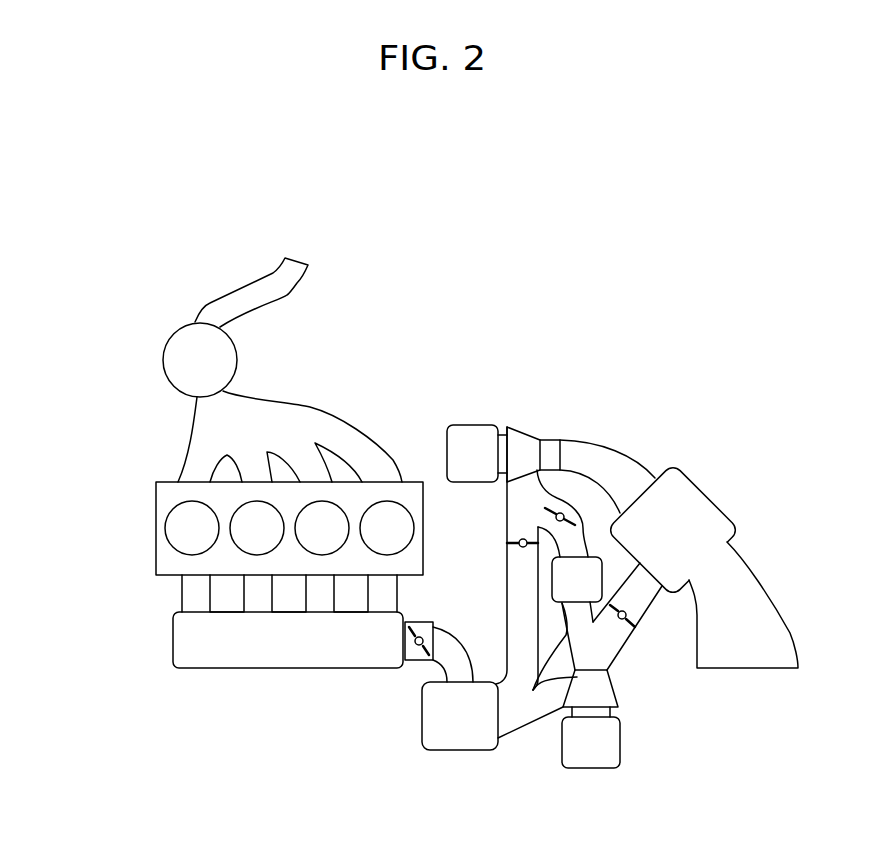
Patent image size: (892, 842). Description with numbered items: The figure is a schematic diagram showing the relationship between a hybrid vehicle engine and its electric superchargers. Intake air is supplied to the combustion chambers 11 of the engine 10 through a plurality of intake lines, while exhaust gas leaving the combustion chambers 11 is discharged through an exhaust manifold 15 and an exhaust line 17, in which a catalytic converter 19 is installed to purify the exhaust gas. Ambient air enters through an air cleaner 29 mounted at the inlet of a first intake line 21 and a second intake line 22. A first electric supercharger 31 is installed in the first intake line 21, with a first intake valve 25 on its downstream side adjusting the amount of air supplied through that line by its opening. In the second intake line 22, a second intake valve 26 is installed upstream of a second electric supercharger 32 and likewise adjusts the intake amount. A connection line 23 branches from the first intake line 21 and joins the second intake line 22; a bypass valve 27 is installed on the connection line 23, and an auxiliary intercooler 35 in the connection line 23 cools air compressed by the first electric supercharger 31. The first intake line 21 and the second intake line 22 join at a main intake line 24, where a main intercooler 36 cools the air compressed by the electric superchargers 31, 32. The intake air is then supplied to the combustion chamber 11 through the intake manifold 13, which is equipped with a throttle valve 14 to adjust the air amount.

The engine 10 is at (131, 591).
The combustion chamber 11 is at (167, 532).
The intake manifold 13 is at (173, 638).
The throttle valve 14 is at (433, 622).
The exhaust manifold 15 is at (188, 465).
The exhaust line 17 is at (243, 288).
The catalytic converter 19 is at (163, 358).
The first intake line 21 is at (596, 444).
The second intake line 22 is at (652, 608).
The connection line 23 is at (548, 717).
The main intake line 24 is at (440, 669).
The first intake valve 25 is at (507, 541).
The second intake valve 26 is at (627, 628).
The bypass valve 27 is at (560, 513).
The air cleaner 29 is at (717, 490).
The first electric supercharger 31 is at (446, 408).
The second electric supercharger 32 is at (634, 745).
The auxiliary intercooler 35 is at (580, 557).
The main intercooler 36 is at (458, 752).